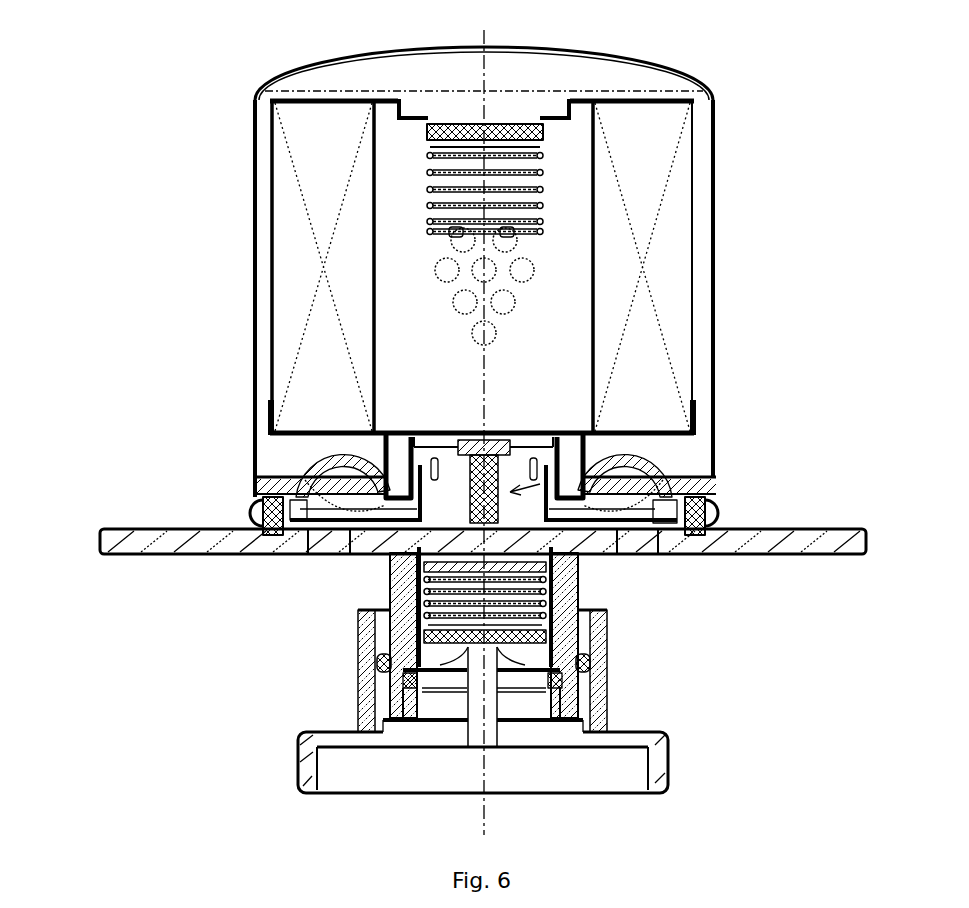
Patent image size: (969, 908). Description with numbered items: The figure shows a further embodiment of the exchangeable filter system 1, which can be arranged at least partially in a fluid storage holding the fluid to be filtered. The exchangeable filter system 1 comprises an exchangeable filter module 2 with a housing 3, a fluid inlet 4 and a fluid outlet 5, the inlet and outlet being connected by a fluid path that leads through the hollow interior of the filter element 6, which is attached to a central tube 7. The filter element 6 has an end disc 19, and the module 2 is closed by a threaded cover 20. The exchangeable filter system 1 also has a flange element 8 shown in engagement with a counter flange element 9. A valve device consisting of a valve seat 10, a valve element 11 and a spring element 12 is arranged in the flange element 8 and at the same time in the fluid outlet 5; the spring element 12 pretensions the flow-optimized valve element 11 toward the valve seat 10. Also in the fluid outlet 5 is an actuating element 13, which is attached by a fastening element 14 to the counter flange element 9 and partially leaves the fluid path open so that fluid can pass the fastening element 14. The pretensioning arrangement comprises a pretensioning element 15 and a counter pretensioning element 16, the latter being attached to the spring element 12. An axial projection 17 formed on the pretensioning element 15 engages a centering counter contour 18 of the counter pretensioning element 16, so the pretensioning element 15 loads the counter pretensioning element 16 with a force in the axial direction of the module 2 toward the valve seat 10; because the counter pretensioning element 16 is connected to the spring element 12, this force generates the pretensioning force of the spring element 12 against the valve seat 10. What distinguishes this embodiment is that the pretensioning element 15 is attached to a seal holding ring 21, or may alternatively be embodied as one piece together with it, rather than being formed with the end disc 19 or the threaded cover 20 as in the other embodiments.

The exchangeable filter system 1 is at (173, 112).
The exchangeable filter module 2 is at (278, 70).
The housing 3 is at (250, 224).
The fluid inlet 4 is at (328, 548).
The fluid outlet 5 is at (383, 775).
The filter element 6 is at (655, 160).
The central tube 7 is at (596, 248).
The flange element 8 is at (563, 587).
The counter flange element 9 is at (600, 625).
The valve seat 10 is at (585, 665).
The valve element 11 is at (520, 640).
The spring element 12 is at (537, 610).
The actuating element 13 is at (477, 675).
The fastening element 14 is at (433, 738).
The pretensioning element 15 is at (620, 462).
The counter pretensioning element 16 is at (723, 513).
The axial projection 17 is at (380, 460).
The centering counter contour 18 is at (300, 490).
The end disc 19 is at (287, 430).
The threaded cover 20 is at (562, 507).
The seal holding ring 21 is at (633, 424).